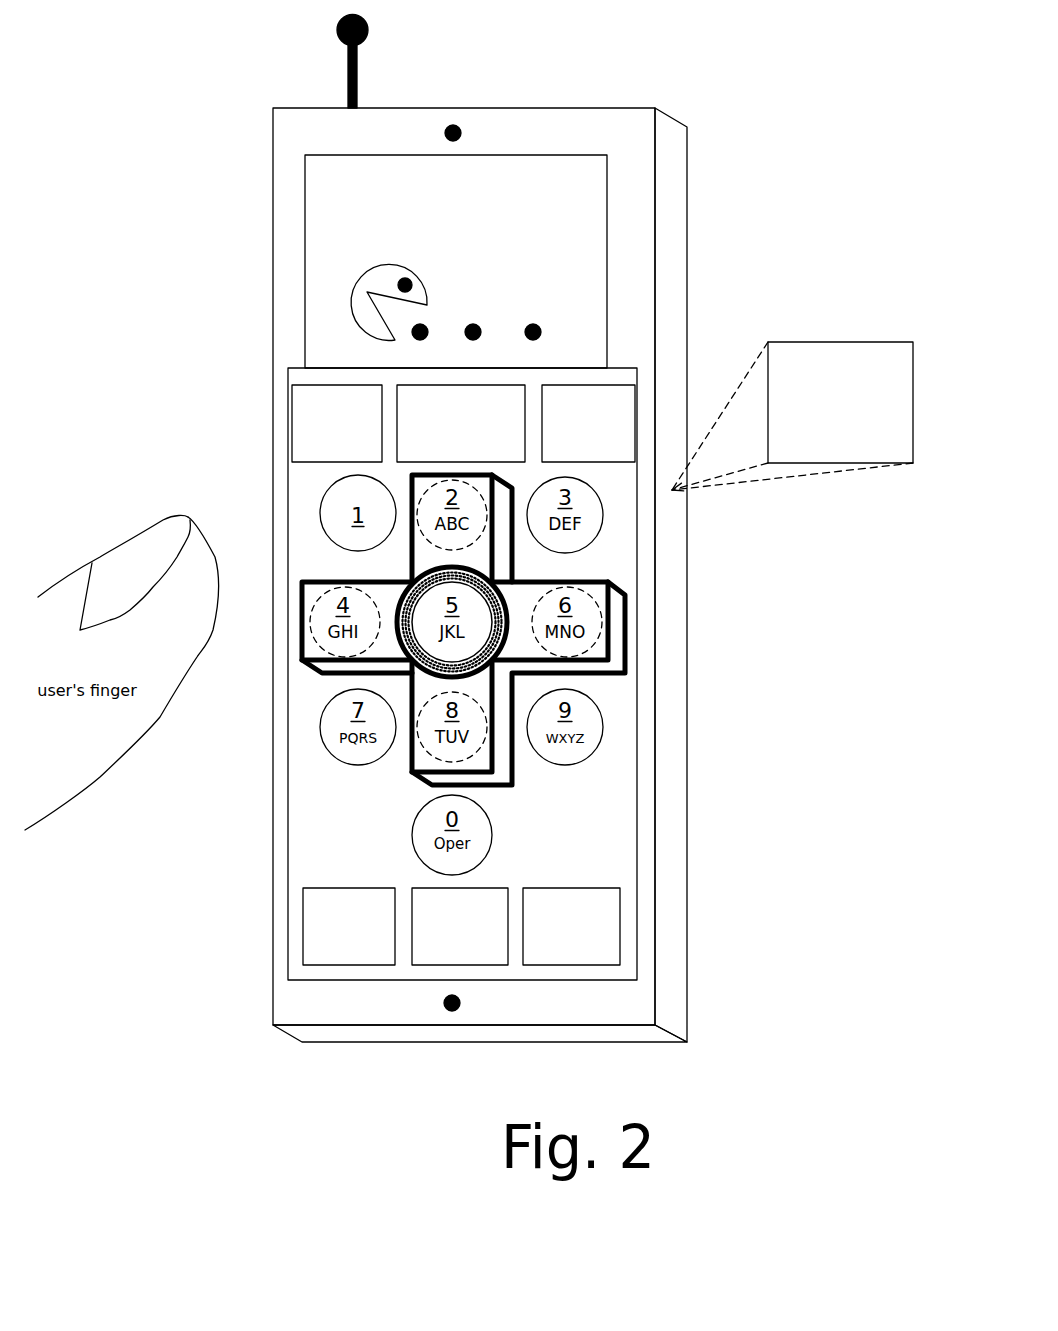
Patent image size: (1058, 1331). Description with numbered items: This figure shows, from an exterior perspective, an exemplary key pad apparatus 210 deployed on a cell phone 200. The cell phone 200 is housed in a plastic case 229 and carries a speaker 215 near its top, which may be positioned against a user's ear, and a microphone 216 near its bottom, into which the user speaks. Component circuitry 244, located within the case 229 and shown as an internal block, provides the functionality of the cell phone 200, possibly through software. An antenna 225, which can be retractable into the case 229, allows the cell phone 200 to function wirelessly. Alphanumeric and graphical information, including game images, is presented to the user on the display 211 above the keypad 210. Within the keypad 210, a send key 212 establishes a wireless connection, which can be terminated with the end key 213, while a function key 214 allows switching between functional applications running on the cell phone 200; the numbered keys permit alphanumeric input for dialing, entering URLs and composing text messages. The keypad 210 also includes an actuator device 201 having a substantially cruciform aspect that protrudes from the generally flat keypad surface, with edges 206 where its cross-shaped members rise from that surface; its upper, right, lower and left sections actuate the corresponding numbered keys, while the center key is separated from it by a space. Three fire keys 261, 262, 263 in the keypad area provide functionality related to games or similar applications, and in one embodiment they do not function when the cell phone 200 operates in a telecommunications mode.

The cell phone 200 is at (81, 70).
The actuator device 201 is at (593, 754).
The edges 206 is at (477, 603).
The key pad apparatus 210 is at (315, 856).
The display 211 is at (437, 236).
The send key 212 is at (319, 440).
The end key 213 is at (571, 440).
The function key 214 is at (443, 440).
The speaker 215 is at (502, 91).
The microphone 216 is at (387, 1055).
The antenna 225 is at (412, 62).
The plastic case 229 is at (521, 575).
The component circuitry 244 is at (822, 422).
The fire key 261 is at (331, 946).
The fire key 262 is at (442, 946).
The fire key 263 is at (553, 946).